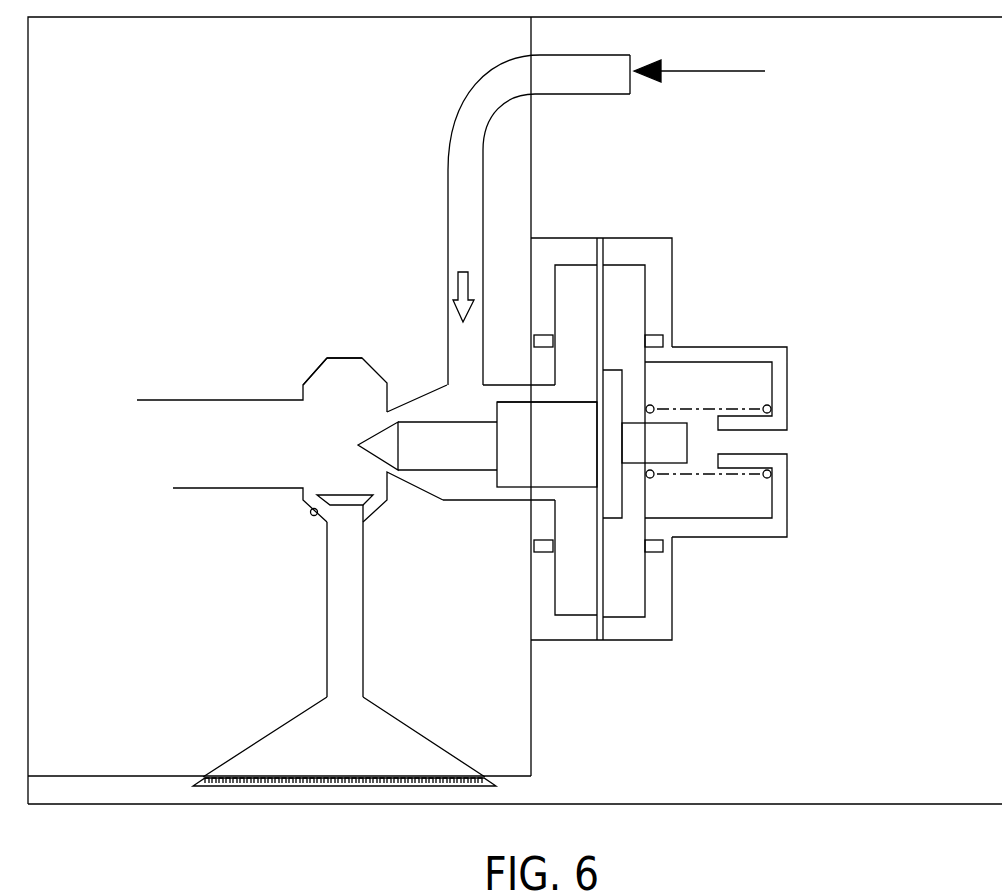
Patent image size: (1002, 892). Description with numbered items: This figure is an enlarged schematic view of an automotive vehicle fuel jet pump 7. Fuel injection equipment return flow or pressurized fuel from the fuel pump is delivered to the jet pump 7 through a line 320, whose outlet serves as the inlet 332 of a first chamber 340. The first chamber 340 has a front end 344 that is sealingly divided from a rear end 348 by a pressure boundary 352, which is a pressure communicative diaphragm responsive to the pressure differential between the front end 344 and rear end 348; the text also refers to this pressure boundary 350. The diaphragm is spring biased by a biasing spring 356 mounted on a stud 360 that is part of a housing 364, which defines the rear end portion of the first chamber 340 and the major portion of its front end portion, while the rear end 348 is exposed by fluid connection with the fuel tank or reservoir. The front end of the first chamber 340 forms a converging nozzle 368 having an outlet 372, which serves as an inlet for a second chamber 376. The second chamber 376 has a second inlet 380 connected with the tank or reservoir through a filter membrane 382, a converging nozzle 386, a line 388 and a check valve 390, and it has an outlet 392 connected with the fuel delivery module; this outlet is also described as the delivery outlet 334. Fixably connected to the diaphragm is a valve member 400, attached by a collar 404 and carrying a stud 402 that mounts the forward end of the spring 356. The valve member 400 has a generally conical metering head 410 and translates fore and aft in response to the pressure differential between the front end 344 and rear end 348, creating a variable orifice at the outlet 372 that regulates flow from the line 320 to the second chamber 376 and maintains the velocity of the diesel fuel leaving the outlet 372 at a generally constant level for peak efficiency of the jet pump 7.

The fluid jet pump 7 is at (391, 213).
The line 320 is at (582, 100).
The inlet 332 is at (485, 386).
The delivery outlet 334 is at (140, 400).
The first chamber 340 is at (472, 500).
The front end 344 is at (573, 603).
The rear end 348 is at (630, 603).
The pressure boundary 350 is at (762, 428).
The pressure boundary 352 is at (605, 283).
The biasing spring 356 is at (737, 477).
The stud 360 is at (735, 410).
The housing 364 is at (778, 529).
The converging nozzle 368 is at (409, 398).
The outlet 372 is at (402, 479).
The second chamber 376 is at (315, 372).
The second inlet 380 is at (311, 511).
The filter membrane 382 is at (340, 779).
The converging nozzle 386 is at (378, 712).
The line 388 is at (325, 637).
The check valve 390 is at (350, 506).
The outlet 392 is at (310, 380).
The valve member 400 is at (560, 468).
The stud 402 is at (663, 422).
The collar 404 is at (607, 370).
The metering head 410 is at (375, 432).